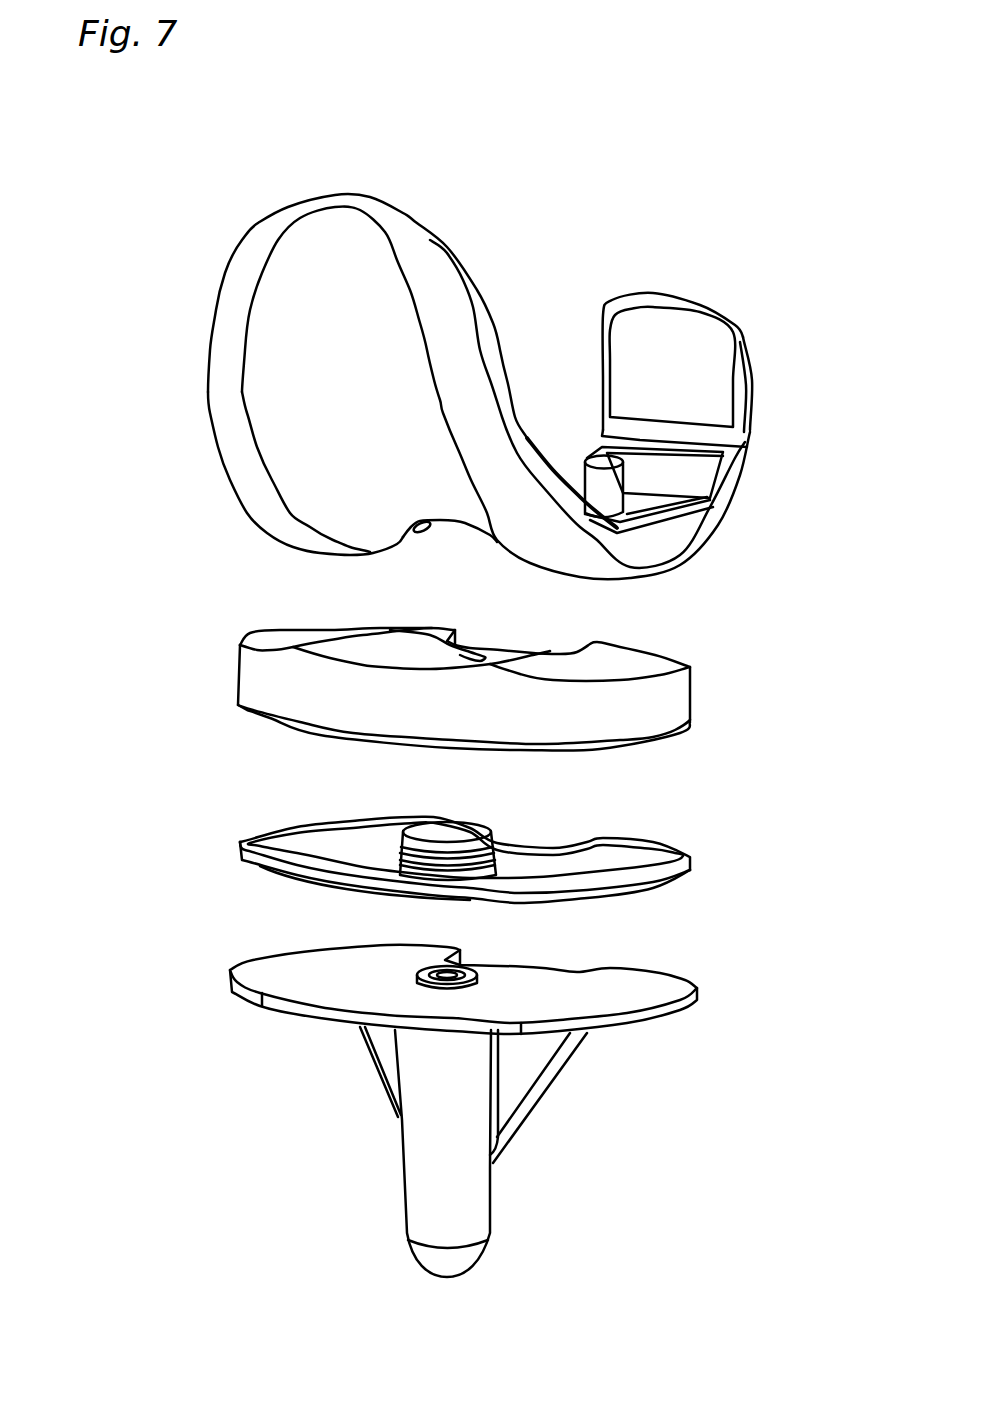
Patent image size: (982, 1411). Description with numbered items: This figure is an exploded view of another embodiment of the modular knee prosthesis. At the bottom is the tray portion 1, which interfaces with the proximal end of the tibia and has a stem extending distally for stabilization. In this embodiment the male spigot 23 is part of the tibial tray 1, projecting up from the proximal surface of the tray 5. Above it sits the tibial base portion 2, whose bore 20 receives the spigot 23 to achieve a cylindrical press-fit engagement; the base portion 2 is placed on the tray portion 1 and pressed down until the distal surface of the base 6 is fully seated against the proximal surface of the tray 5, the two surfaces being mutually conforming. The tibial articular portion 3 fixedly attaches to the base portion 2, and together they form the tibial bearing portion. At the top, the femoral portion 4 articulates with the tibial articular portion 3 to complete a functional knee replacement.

The tray portion 1 is at (348, 1144).
The tibial base portion 2 is at (195, 854).
The tibial articular portion 3 is at (197, 683).
The femoral portion 4 is at (155, 413).
The proximal surface of the tray 5 is at (639, 958).
The distal surface of the base portion 6 is at (277, 912).
The bore in the base 20 is at (463, 799).
The male spigot 23 is at (493, 946).